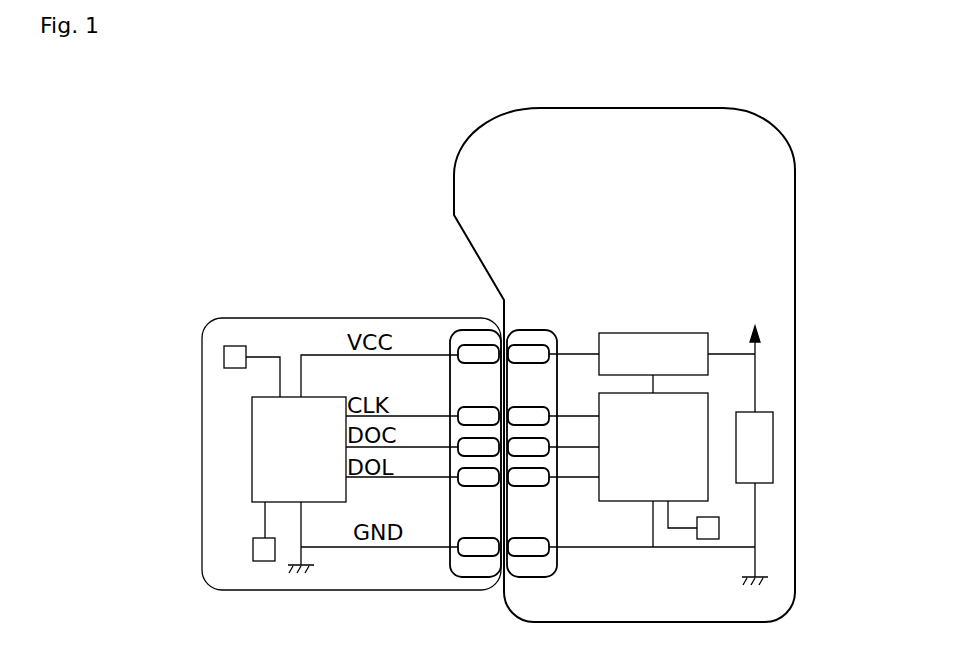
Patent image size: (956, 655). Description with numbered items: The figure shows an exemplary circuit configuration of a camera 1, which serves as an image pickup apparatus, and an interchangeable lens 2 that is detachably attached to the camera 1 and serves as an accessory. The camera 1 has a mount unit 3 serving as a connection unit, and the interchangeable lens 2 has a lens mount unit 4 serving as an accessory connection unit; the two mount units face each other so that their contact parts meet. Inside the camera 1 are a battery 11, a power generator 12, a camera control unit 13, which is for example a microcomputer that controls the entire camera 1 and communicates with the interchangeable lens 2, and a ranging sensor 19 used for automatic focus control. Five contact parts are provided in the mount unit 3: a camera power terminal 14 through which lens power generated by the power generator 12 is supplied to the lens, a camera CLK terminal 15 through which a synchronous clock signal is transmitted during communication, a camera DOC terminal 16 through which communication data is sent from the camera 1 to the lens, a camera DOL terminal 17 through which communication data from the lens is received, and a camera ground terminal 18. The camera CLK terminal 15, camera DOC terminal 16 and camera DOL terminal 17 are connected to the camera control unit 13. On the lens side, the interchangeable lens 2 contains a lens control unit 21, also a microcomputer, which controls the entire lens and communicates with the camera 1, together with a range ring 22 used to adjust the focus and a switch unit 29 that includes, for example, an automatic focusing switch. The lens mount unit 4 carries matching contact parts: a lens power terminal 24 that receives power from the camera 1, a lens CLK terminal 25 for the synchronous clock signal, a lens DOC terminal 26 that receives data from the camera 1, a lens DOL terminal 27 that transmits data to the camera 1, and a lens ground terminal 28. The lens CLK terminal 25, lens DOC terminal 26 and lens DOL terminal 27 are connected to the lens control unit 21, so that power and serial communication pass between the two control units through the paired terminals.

The camera 1 is at (652, 125).
The interchangeable lens 2 is at (255, 335).
The mount unit 3 is at (537, 572).
The lens mount unit 4 is at (475, 580).
The battery 11 is at (773, 438).
The power generator 12 is at (660, 333).
The camera control unit 13 is at (695, 420).
The camera power terminal 14 is at (533, 345).
The camera CLK terminal 15 is at (532, 415).
The camera DOC terminal 16 is at (530, 445).
The camera DOL terminal 17 is at (530, 475).
The camera ground terminal 18 is at (530, 545).
The ranging sensor 19 is at (706, 530).
The lens control unit 21 is at (252, 427).
The range ring 22 is at (237, 346).
The lens power terminal 24 is at (462, 350).
The lens CLK terminal 25 is at (470, 410).
The lens DOC terminal 26 is at (470, 445).
The lens DOL terminal 27 is at (470, 478).
The lens ground terminal 28 is at (470, 550).
The switch unit 29 is at (265, 562).